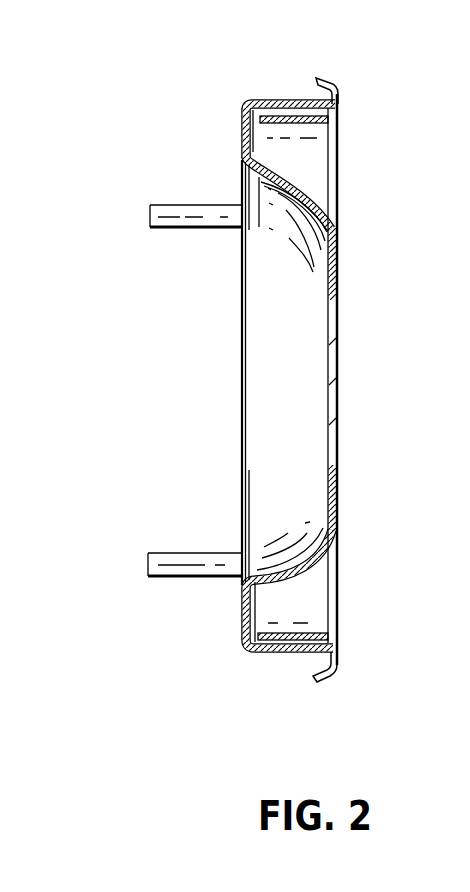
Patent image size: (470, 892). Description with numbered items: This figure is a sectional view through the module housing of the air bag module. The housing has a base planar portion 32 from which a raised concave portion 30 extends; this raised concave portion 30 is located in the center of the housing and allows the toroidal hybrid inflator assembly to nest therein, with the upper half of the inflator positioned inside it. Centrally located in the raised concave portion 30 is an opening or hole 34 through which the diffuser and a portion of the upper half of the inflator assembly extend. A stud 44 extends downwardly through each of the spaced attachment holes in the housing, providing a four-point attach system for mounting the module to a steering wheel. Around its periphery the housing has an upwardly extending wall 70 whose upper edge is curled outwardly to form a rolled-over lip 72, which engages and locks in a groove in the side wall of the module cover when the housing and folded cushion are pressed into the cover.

The raised concave portion 30 is at (321, 213).
The base planar portion 32 is at (242, 129).
The opening or hole 34 is at (331, 250).
The stud 44 is at (173, 219).
The upwardly extending wall 70 is at (277, 100).
The rolled-over lip 72 is at (334, 85).